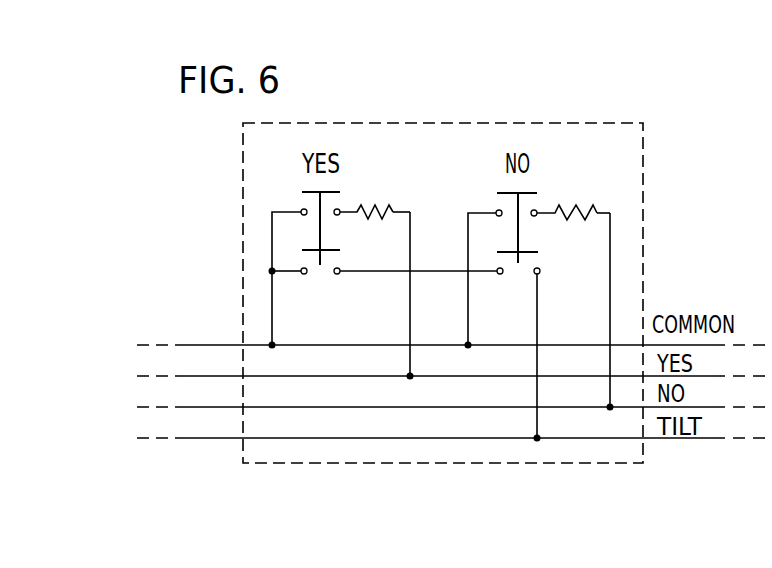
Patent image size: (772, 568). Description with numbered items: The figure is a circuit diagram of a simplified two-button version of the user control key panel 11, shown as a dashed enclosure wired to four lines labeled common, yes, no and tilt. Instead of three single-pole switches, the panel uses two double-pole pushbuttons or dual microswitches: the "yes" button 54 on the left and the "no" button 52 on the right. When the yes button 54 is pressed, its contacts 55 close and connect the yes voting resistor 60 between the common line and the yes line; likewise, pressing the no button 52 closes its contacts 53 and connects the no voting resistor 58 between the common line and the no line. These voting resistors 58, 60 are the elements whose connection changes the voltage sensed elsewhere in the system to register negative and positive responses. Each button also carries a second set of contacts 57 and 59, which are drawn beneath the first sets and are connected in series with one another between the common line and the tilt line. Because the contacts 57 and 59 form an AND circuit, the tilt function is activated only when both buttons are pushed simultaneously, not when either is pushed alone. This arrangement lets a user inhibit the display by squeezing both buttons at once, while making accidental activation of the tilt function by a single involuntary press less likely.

The key panel 11 is at (644, 240).
The no button 52 is at (537, 192).
The no button contacts 53 is at (499, 210).
The yes button 54 is at (340, 191).
The yes button contacts 55 is at (302, 209).
The second set of contacts 57 is at (536, 275).
The no voting resistor 58 is at (590, 206).
The second set of contacts 59 is at (338, 275).
The yes voting resistor 60 is at (378, 205).